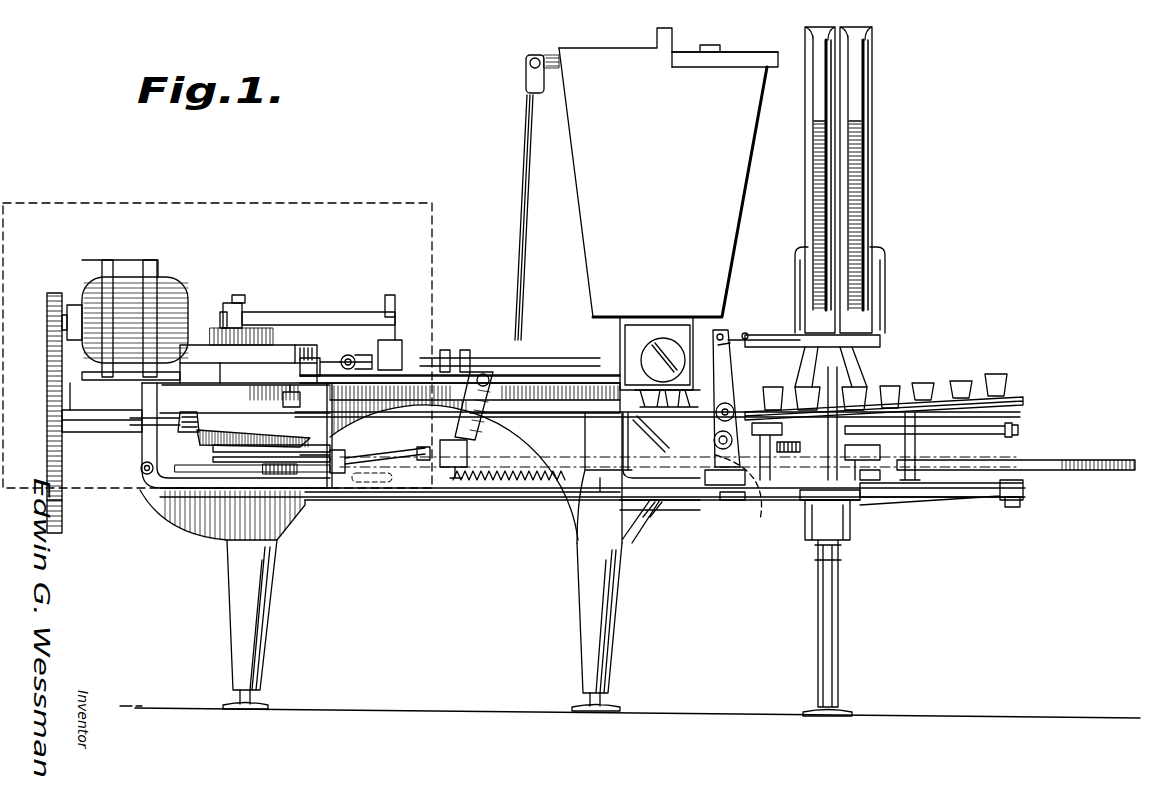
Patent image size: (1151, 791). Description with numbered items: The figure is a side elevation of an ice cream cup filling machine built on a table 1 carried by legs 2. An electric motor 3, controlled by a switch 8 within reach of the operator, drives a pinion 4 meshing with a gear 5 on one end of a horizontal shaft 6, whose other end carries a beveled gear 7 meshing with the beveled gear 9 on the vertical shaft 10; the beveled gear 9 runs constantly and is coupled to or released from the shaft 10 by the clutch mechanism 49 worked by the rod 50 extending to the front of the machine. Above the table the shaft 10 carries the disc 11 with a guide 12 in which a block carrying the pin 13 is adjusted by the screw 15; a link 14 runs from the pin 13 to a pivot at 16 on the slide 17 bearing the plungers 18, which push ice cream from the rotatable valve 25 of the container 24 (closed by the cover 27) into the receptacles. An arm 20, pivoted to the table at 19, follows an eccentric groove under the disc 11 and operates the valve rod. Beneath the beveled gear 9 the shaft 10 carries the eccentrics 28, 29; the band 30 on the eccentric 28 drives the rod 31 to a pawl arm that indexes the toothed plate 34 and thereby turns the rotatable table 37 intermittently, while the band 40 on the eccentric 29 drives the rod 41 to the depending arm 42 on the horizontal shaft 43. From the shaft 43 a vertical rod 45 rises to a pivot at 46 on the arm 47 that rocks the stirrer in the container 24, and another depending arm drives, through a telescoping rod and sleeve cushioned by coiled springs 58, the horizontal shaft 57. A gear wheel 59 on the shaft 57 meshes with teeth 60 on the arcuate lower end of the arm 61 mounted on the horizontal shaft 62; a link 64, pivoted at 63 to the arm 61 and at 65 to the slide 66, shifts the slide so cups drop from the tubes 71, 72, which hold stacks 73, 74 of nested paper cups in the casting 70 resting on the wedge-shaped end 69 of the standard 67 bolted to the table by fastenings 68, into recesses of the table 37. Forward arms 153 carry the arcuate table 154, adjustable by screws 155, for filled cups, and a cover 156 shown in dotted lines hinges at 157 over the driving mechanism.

The table 1 is at (579, 469).
The legs 2 is at (256, 642).
The electric motor 3 is at (140, 305).
The pinion 4 is at (55, 287).
The gear 5 is at (62, 519).
The horizontal shaft 6 is at (120, 432).
The beveled gear 7 is at (192, 407).
The switch 8 is at (120, 257).
The beveled gear 9 is at (200, 440).
The vertical shaft 10 is at (253, 422).
The disc 11 is at (192, 343).
The guide 12 is at (258, 328).
The vertically extending pin 13 is at (240, 295).
The link 14 is at (318, 312).
The adjusting screw 15 is at (222, 312).
The pivotal connection 16 is at (405, 292).
The slide 17 is at (420, 370).
The plungers 18 is at (482, 358).
The pivotal connection 19 is at (305, 408).
The arm 20 is at (345, 356).
The container 24 is at (668, 172).
The rotatable valve 25 is at (655, 338).
The cover 27 is at (725, 58).
The eccentric 28 is at (240, 462).
The eccentric 29 is at (225, 452).
The band or ring 30 is at (345, 450).
The rod 31 is at (668, 480).
The toothed plate 34 is at (878, 448).
The rotatable table 37 is at (1022, 396).
The band or ring 40 is at (200, 472).
The rod 41 is at (400, 452).
The depending arm 42 is at (530, 417).
The horizontal shaft 43 is at (490, 372).
The vertically extending rod 45 is at (514, 209).
The pivotal connection 46 is at (526, 70).
The arm 47 is at (555, 55).
The clutch mechanism 49 is at (295, 383).
The rod 50 is at (960, 434).
The horizontal shaft 57 is at (713, 443).
The coiled springs 58 is at (500, 485).
The gear wheel 59 is at (728, 500).
The teeth 60 is at (758, 500).
The arm 61 is at (740, 348).
The horizontal shaft 62 is at (715, 414).
The pivot 63 is at (720, 328).
The link 64 is at (735, 337).
The pivotal connection 65 is at (748, 333).
The slide or frame 66 is at (772, 352).
The standard 67 is at (878, 392).
The bolts or fastenings 68 is at (855, 480).
The wedge-shaped upper end 69 is at (860, 375).
The casting 70 is at (875, 320).
The tube or magazine 71 is at (802, 93).
The tube or magazine 72 is at (873, 108).
The stack of nested paper receptacles 73 is at (805, 175).
The stack of nested paper receptacles 74 is at (872, 162).
The arms 153 is at (948, 500).
The arcuate-shaped table 154 is at (1085, 452).
The screws 155 is at (1018, 507).
The cover 156 is at (371, 215).
The pivotal connection 157 is at (141, 469).